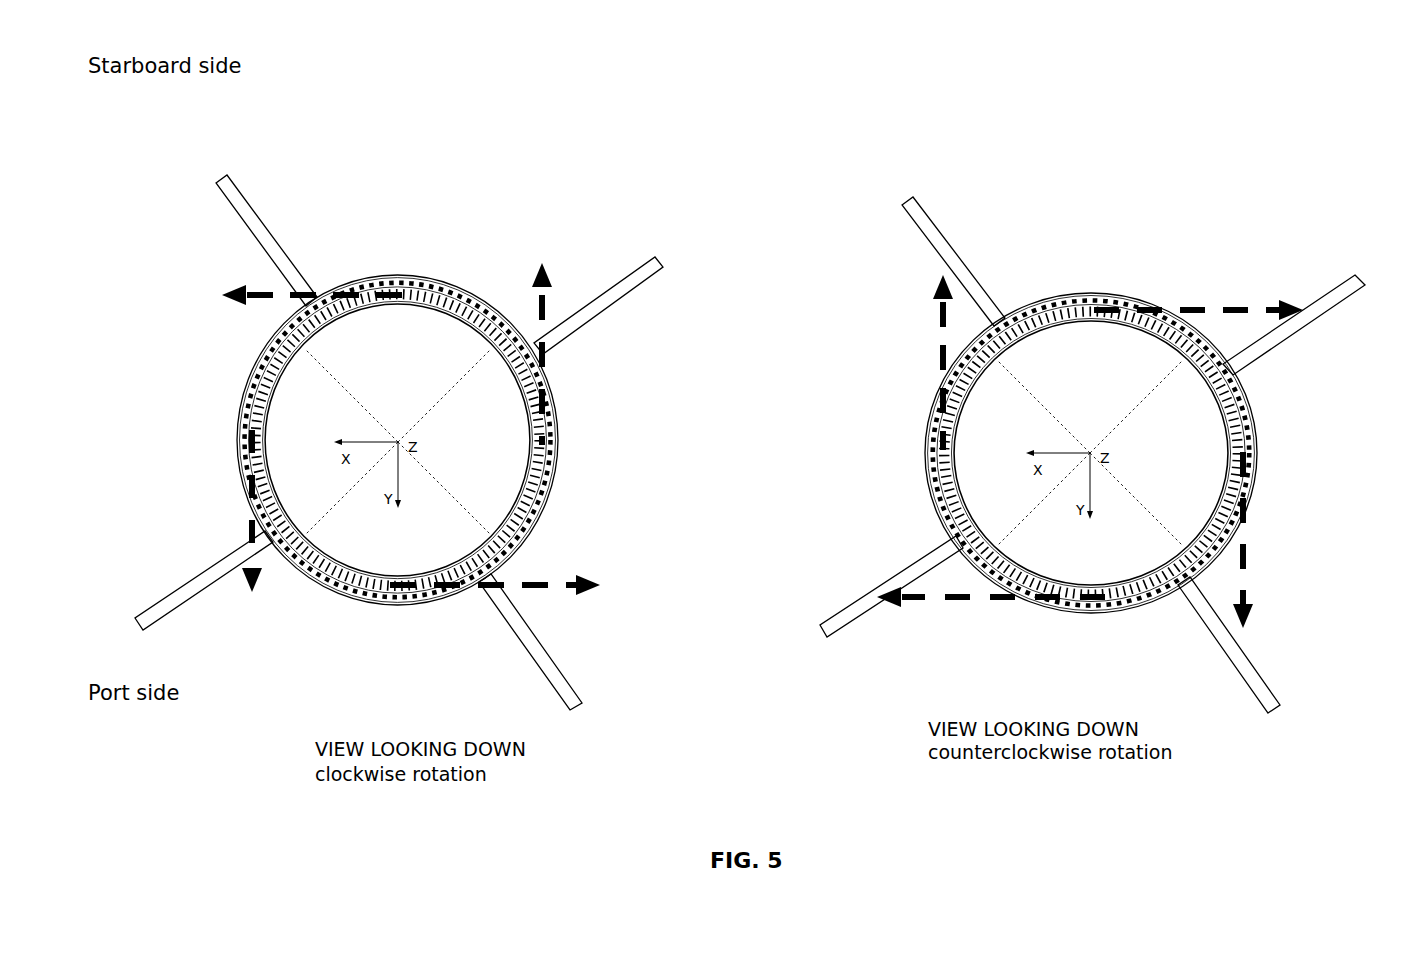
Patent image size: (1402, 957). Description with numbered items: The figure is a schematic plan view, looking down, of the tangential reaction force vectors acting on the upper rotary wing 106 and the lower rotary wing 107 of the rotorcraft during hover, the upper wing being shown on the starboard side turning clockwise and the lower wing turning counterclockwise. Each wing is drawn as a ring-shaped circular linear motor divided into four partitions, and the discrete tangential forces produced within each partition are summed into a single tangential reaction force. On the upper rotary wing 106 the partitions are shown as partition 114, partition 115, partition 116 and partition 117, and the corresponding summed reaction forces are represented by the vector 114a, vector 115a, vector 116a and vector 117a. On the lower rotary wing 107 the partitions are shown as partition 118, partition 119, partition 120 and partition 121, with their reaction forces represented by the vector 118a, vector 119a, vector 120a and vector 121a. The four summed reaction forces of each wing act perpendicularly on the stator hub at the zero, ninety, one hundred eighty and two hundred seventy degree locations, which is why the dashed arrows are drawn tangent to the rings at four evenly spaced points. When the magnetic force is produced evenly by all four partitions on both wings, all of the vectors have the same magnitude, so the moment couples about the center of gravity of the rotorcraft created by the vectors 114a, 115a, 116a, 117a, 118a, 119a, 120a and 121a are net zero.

The upper rotary wing 106 is at (521, 202).
The lower rotary wing 107 is at (1183, 204).
The partition 114 is at (237, 450).
The vector 114a is at (223, 530).
The partition 115 is at (389, 275).
The vector 115a is at (293, 288).
The partition 116 is at (558, 475).
The vector 116a is at (597, 348).
The partition 117 is at (388, 607).
The vector 117a is at (505, 642).
The partition 118 is at (928, 458).
The vector 118a is at (926, 323).
The partition 119 is at (1068, 295).
The vector 119a is at (1229, 322).
The partition 120 is at (1258, 443).
The vector 120a is at (1249, 582).
The partition 121 is at (1085, 613).
The vector 121a is at (962, 586).